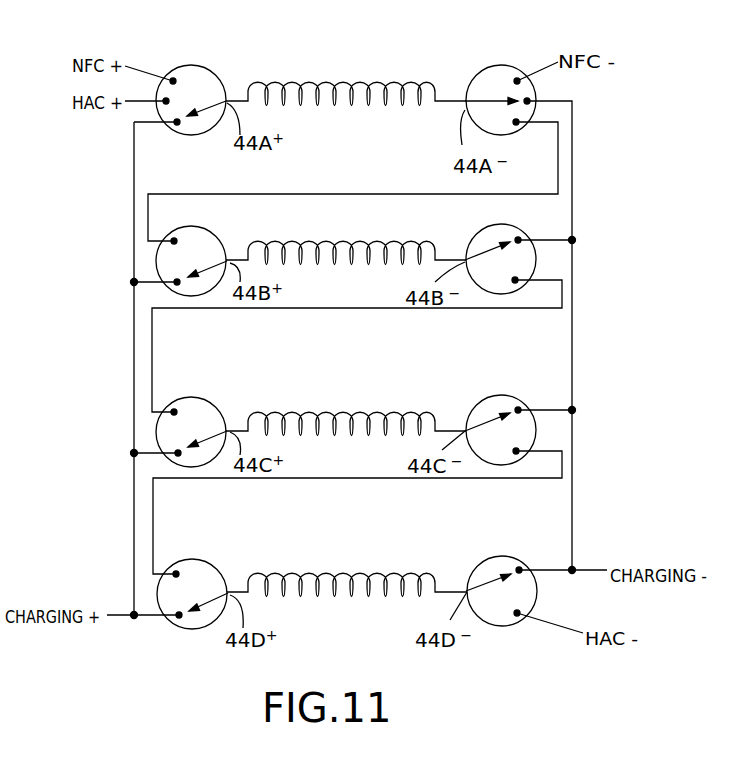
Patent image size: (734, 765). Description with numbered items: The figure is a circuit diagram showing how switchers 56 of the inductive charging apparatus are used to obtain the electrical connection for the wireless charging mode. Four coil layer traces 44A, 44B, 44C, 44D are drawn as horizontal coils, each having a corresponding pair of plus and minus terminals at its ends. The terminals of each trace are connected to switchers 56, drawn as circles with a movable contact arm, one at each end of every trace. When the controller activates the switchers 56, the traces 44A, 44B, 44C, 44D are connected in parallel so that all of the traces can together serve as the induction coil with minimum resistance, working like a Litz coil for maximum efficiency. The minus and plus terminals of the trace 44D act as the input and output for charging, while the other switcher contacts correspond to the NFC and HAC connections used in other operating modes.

The switcher 56 is at (513, 562).
The layer trace 44A is at (308, 81).
The layer trace 44B is at (305, 242).
The layer trace 44C is at (325, 412).
The layer trace 44D is at (307, 573).